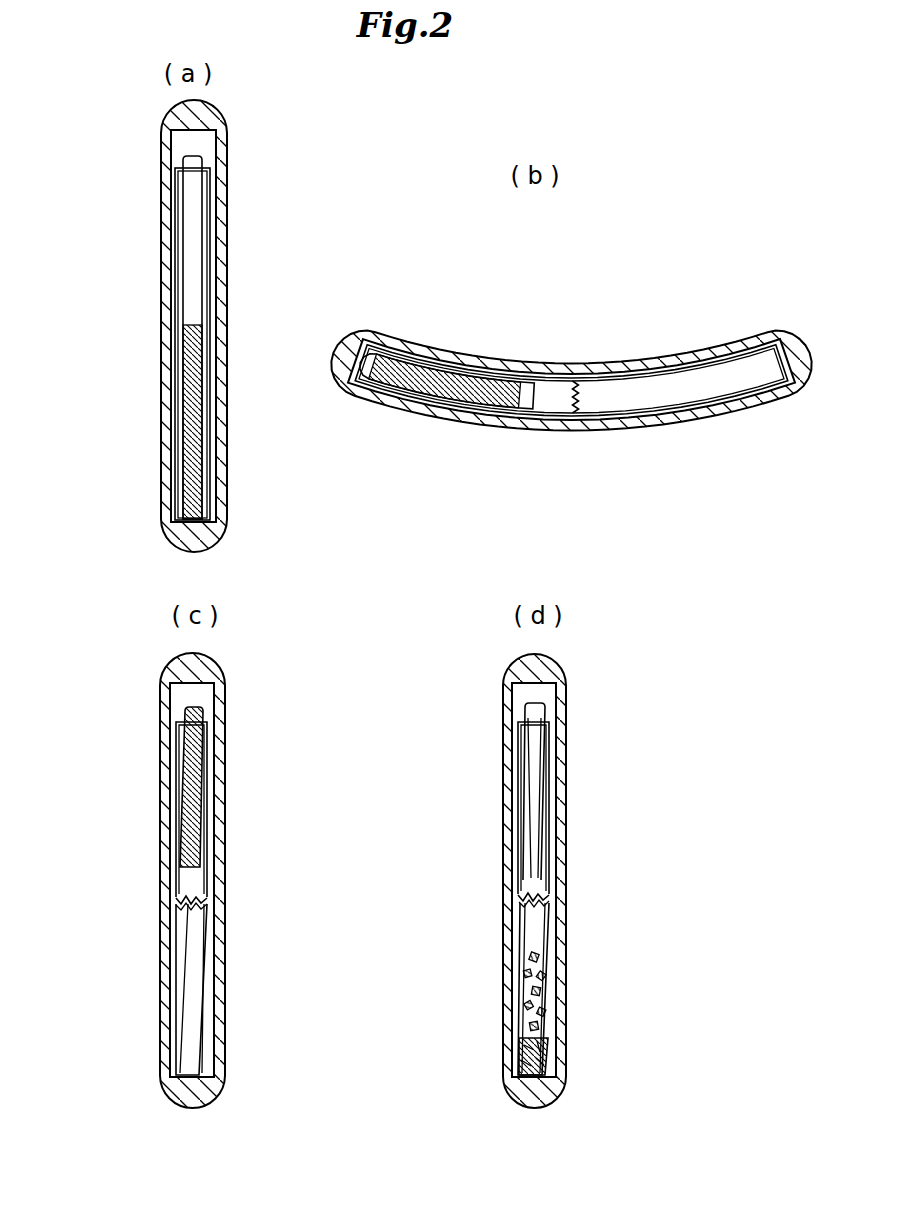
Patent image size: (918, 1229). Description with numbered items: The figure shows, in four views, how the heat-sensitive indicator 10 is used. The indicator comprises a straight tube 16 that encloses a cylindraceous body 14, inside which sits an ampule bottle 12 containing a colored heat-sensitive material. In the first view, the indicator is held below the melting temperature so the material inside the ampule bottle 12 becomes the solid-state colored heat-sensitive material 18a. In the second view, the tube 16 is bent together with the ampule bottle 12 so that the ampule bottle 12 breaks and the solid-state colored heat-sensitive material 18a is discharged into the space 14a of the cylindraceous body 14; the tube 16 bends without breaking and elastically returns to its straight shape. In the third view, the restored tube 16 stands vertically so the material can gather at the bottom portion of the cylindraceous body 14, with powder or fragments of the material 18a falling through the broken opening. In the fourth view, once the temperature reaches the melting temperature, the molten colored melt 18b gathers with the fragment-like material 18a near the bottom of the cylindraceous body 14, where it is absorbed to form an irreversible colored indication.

The heat-sensitive indicator 10 is at (442, 598).
The ampule bottle 12 is at (183, 158).
The cylindraceous body 14 is at (180, 208).
The space 14a is at (566, 382).
The straight tube 16 is at (167, 247).
The solid-state colored heat-sensitive material 18a is at (188, 378).
The colored melt 18b is at (520, 1037).